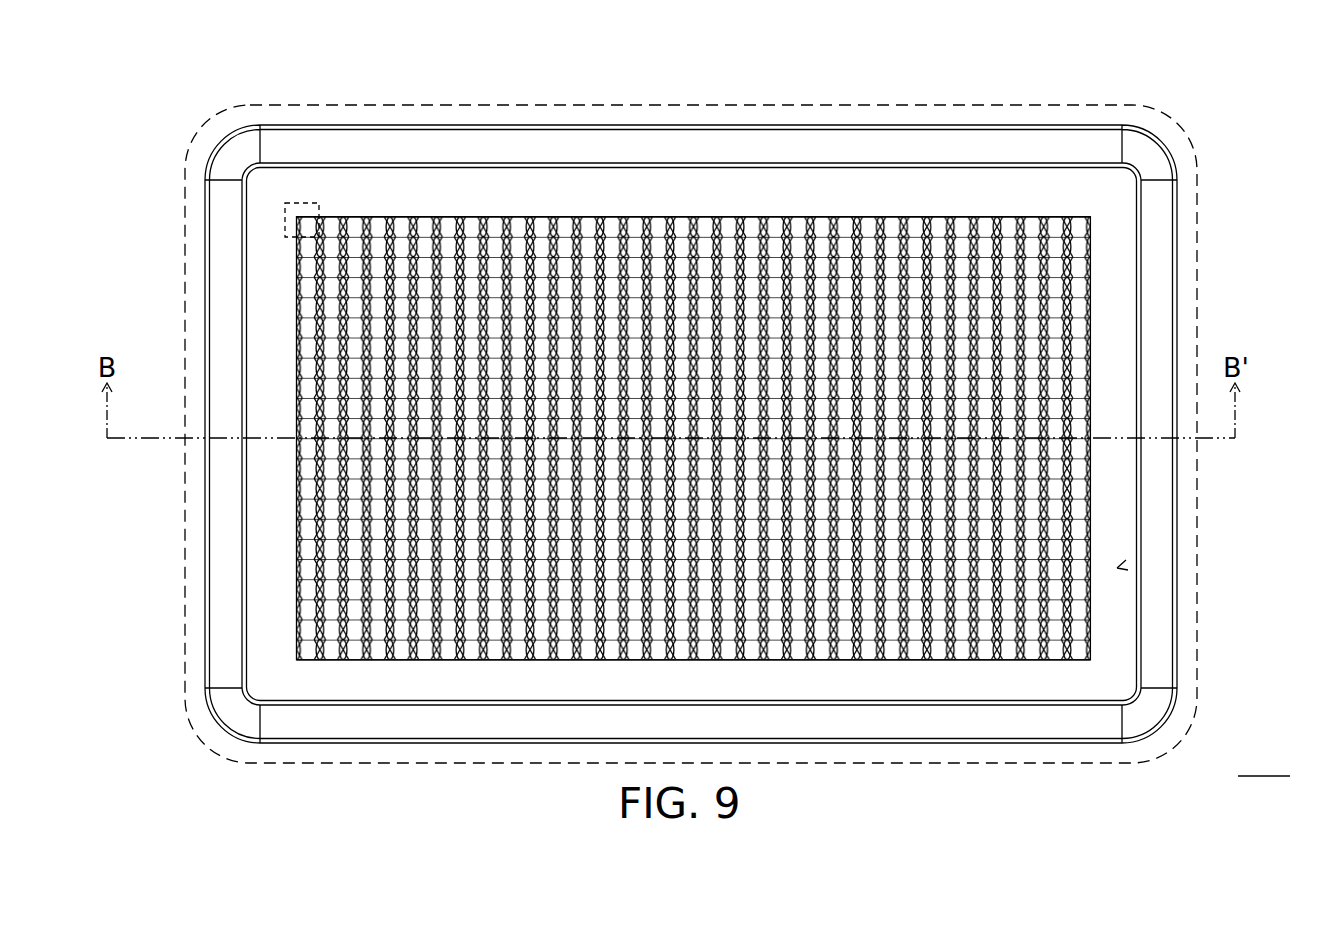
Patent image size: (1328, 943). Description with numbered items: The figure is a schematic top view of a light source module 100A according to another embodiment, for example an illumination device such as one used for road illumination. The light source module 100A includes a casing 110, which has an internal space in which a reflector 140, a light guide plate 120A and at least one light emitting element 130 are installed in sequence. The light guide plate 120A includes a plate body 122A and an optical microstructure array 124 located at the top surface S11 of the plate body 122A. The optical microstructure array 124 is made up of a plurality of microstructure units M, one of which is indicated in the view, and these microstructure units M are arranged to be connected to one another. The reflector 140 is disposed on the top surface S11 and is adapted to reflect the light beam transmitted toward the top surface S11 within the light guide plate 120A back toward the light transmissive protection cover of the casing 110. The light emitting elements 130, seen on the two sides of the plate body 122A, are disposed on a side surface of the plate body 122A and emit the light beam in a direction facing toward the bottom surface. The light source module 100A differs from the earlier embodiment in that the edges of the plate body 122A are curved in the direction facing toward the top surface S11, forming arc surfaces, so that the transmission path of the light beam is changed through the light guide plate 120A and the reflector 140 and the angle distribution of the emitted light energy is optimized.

The casing 110 is at (1198, 243).
The light guide plate 120A is at (1150, 158).
The light emitting element 130 is at (233, 284).
The plate body 122A is at (650, 178).
The reflector 140 is at (435, 216).
The optical microstructure array 124 is at (557, 214).
The microstructure unit M is at (318, 203).
The top surface S11 is at (1117, 568).
The light source module 100A is at (1264, 762).